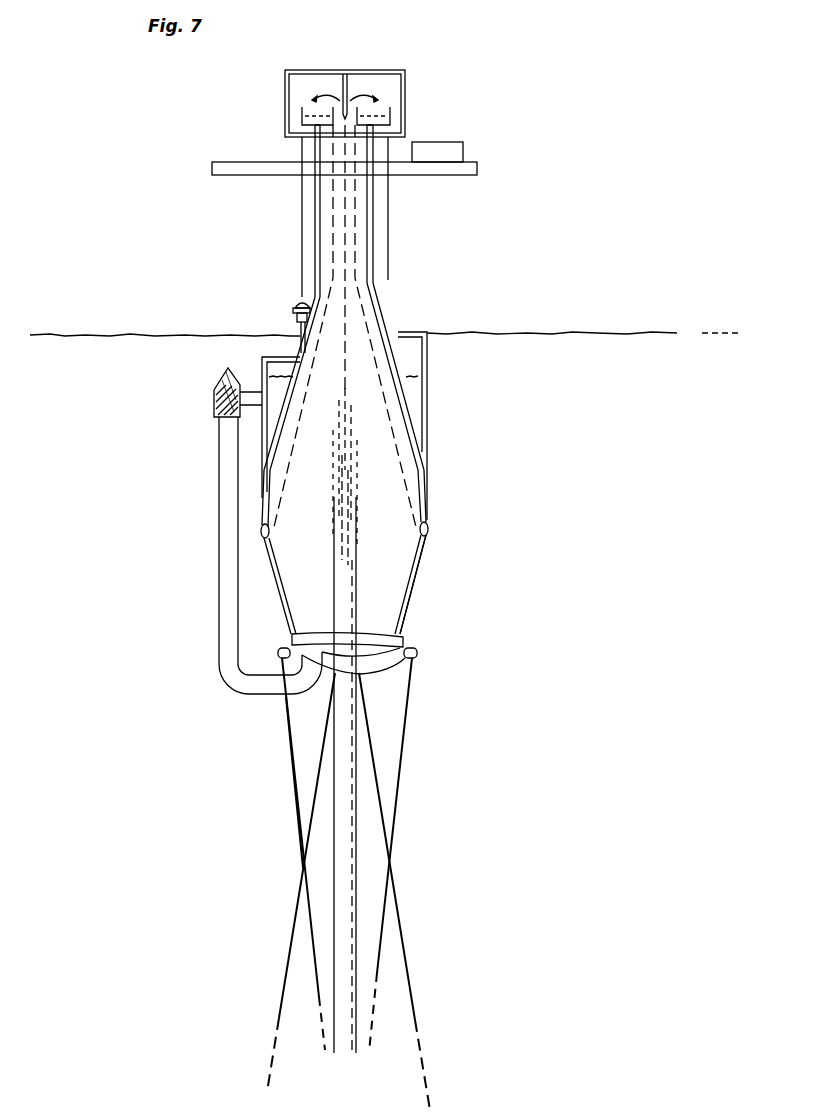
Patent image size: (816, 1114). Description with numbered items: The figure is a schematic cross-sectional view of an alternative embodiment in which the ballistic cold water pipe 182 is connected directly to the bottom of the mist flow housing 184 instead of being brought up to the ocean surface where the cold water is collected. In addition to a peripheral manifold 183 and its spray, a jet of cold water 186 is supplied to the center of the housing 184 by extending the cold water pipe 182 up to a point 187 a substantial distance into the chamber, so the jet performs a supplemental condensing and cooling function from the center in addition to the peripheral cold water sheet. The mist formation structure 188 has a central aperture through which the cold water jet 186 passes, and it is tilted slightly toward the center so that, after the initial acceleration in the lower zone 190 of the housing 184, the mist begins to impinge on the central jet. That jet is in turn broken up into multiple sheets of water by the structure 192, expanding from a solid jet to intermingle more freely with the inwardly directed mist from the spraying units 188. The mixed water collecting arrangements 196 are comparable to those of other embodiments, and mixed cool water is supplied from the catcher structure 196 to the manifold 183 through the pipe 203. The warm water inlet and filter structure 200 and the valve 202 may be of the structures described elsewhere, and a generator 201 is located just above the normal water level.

The ballistic cold water pipe 182 is at (348, 810).
The peripheral manifold 183 is at (428, 530).
The mist flow housing 184 is at (422, 570).
The jet of cold water 186 is at (342, 550).
The point 187 is at (358, 513).
The mist formation structure 188 is at (388, 637).
The lower zone 190 is at (390, 590).
The structure 192 is at (350, 473).
The mixed water collecting arrangements 196 is at (403, 88).
The warm water inlet and filter structure 200 is at (217, 398).
The generator 201 is at (295, 311).
The valve 202 is at (223, 617).
The pipe 203 is at (380, 283).